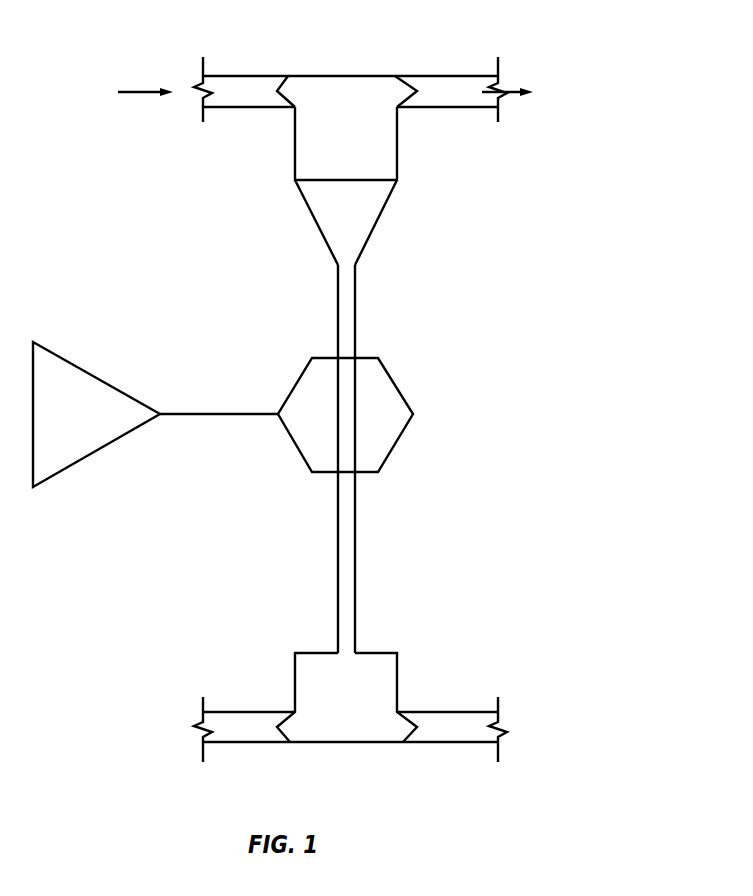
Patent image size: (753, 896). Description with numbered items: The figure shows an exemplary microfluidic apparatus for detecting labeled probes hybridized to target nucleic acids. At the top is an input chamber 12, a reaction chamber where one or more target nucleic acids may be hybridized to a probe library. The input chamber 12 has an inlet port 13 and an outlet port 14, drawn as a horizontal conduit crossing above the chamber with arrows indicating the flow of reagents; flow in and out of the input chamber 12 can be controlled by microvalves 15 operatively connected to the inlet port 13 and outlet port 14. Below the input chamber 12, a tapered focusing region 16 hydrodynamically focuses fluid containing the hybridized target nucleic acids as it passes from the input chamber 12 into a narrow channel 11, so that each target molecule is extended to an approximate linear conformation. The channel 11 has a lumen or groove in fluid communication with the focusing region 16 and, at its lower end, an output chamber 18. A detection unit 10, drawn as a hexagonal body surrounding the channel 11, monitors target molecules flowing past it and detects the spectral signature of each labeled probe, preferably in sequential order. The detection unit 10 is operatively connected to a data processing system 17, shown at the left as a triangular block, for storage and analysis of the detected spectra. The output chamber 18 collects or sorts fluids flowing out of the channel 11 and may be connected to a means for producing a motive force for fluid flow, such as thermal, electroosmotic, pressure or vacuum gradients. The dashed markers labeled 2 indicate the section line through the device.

The section line of FIG. 2 is at (347, 68).
The detection unit 10 is at (392, 435).
The channel 11 is at (342, 313).
The input chamber 12 is at (390, 152).
The inlet port 13 is at (215, 100).
The outlet port 14 is at (425, 83).
The microvalves 15 is at (285, 77).
The focusing region 16 is at (368, 223).
The data processing system 17 is at (80, 450).
The output chamber 18 is at (387, 685).